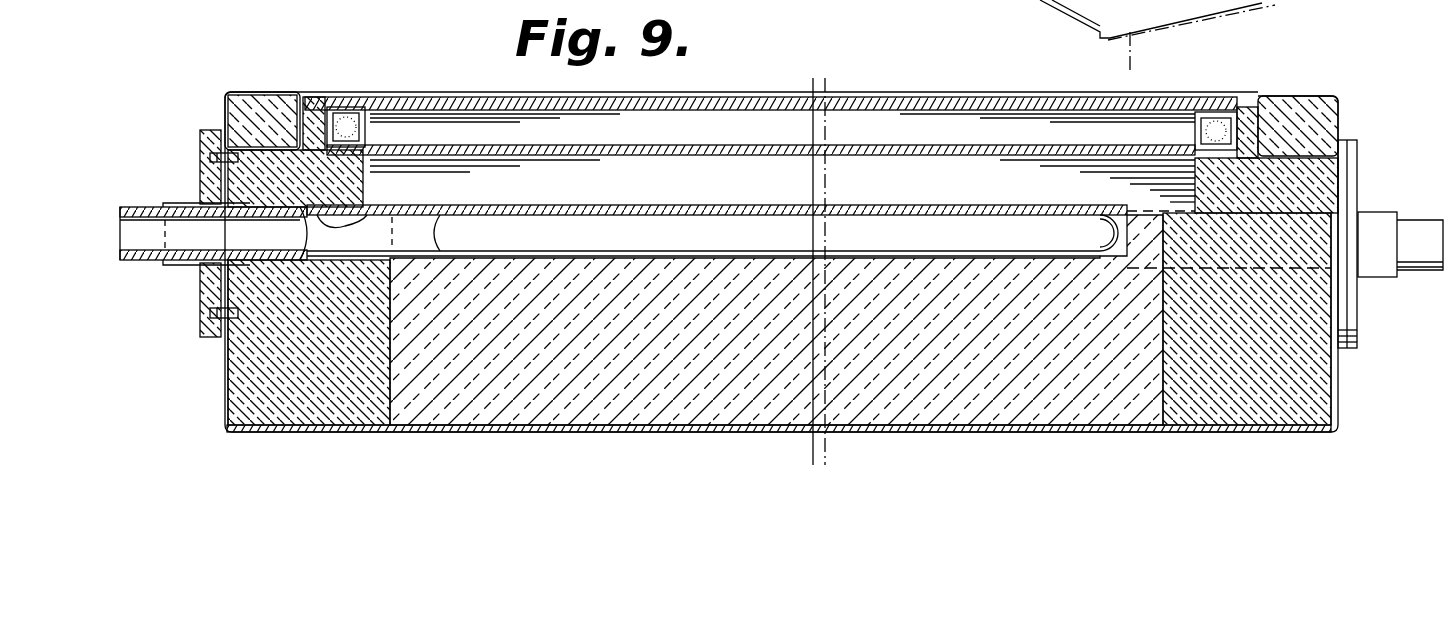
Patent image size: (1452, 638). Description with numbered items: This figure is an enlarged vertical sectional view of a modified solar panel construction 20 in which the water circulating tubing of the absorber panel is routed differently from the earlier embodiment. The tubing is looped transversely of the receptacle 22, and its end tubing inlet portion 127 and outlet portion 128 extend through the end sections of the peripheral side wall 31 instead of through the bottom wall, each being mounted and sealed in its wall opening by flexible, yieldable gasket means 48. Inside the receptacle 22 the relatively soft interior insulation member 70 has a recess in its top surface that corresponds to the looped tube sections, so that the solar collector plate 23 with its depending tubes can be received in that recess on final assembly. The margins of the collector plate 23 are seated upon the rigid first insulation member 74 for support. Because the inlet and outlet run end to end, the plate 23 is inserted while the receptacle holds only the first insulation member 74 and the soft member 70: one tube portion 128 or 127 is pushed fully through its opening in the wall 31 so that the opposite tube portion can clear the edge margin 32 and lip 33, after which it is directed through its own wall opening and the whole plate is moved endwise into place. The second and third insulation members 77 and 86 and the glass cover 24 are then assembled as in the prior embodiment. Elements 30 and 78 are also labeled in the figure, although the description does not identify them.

The solar panel construction 20 is at (992, 92).
The receptacle 22 is at (1330, 90).
The solar collector plate 23 is at (600, 204).
The glass cover 24 is at (677, 90).
The bottom shell wall 30 is at (1042, 440).
The peripheral side wall 31 is at (224, 103).
The edge margin 32 is at (1283, 68).
The lip 33 is at (313, 95).
The gasket means 48 is at (197, 284).
The interior insulation member 70 is at (750, 396).
The first insulation member 74 is at (293, 395).
The second insulation member 77 is at (333, 177).
The cavity 78 is at (322, 210).
The third insulation member 86 is at (263, 113).
The tubing inlet portion 127 is at (1420, 252).
The tubing outlet portion 128 is at (137, 245).